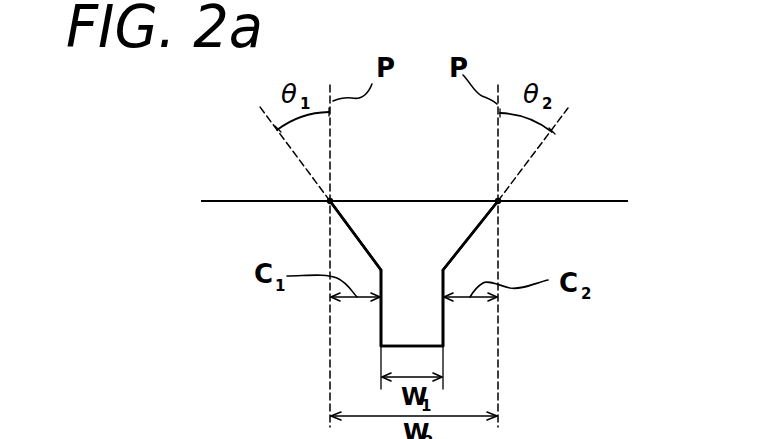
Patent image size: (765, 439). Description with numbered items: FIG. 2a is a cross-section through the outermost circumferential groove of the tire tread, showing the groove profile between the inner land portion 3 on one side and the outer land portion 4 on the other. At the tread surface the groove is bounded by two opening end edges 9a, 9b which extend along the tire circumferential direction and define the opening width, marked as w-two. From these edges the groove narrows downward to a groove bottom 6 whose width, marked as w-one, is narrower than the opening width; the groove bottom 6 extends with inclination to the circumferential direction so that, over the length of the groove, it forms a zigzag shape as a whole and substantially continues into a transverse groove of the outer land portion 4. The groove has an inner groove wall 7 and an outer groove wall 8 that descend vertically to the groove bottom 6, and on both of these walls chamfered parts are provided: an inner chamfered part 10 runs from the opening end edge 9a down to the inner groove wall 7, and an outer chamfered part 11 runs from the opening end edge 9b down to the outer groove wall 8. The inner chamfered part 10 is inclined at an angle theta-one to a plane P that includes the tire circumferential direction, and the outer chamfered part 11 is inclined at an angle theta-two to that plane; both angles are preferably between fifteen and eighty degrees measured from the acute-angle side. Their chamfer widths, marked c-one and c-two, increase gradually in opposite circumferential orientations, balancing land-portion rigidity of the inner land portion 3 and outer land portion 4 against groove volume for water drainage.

The inner land portion 3 is at (270, 212).
The outer land portion 4 is at (591, 212).
The groove bottom 6 is at (430, 348).
The inner groove wall 7 is at (380, 330).
The outer groove wall 8 is at (445, 325).
The opening end edge 9a is at (332, 199).
The opening end edge 9b is at (496, 199).
The inner chamfered part 10 is at (347, 230).
The outer chamfered part 11 is at (480, 230).